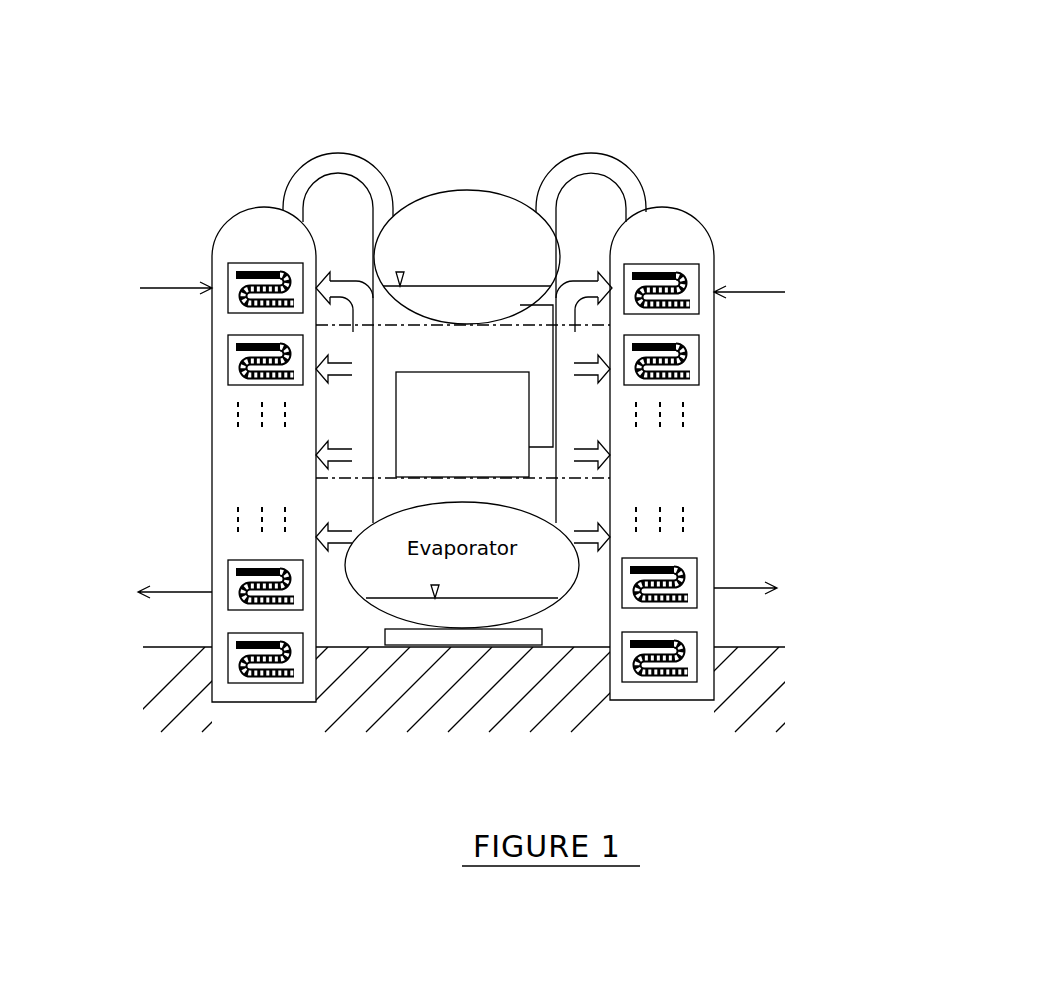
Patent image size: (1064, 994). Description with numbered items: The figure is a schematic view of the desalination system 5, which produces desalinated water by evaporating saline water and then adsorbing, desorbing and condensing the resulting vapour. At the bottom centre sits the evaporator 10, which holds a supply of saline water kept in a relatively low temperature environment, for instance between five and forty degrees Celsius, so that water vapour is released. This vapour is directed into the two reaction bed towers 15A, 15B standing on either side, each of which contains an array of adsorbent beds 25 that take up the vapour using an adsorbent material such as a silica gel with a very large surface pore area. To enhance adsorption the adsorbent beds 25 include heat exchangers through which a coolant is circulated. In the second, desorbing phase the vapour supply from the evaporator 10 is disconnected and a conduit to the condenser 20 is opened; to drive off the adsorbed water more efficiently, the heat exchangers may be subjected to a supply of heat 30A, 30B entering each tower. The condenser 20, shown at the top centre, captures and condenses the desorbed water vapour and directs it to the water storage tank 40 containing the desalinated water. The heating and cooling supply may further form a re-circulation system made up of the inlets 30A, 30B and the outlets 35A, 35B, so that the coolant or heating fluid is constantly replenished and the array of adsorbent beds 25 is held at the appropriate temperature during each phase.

The desalination system 5 is at (835, 135).
The evaporator 10 is at (583, 588).
The reaction bed tower 15A is at (233, 213).
The reaction bed tower 15B is at (714, 450).
The condenser 20 is at (477, 192).
The adsorbent beds 25 is at (717, 565).
The supply of heat 30A is at (140, 253).
The supply of heat 30B is at (792, 258).
The re-circulation system outlet 35A is at (136, 590).
The re-circulation system outlet 35B is at (773, 592).
The water storage tank 40 is at (422, 383).